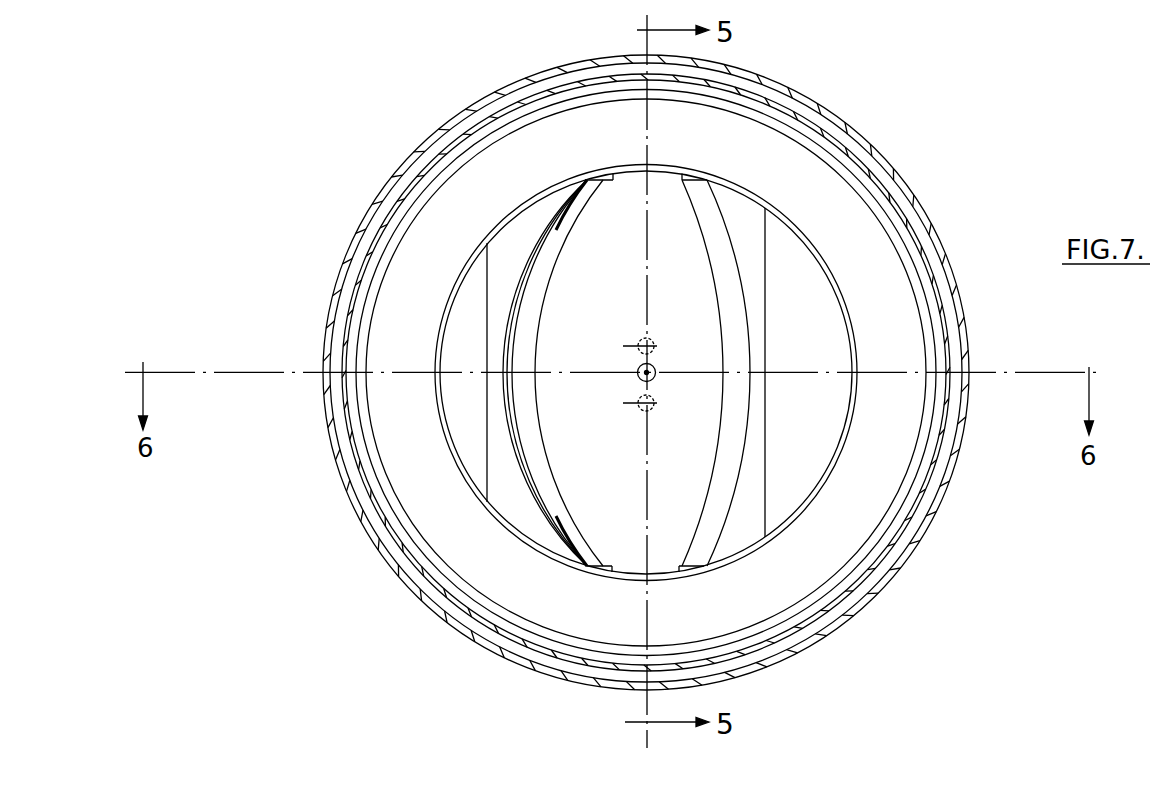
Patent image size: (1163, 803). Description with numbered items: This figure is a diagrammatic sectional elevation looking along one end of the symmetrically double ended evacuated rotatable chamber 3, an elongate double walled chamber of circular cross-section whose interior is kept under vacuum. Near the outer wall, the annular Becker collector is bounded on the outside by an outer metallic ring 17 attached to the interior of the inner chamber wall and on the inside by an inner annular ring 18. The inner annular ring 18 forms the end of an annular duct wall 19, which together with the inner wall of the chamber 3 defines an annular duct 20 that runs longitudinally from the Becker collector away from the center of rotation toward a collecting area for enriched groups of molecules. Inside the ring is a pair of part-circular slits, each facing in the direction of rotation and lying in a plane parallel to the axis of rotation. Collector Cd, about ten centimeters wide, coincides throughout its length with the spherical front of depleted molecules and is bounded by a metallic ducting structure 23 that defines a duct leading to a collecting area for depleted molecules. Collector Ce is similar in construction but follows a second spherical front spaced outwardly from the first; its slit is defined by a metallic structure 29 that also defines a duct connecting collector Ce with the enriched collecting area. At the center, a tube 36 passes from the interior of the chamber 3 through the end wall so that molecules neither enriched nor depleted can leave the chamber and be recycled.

The evacuated rotatable chamber 3 is at (927, 212).
The outer metallic ring 17 is at (920, 475).
The inner annular ring 18 is at (848, 322).
The annular duct wall 19 is at (815, 555).
The annular duct 20 is at (885, 525).
The metallic ducting structure 23 is at (755, 284).
The metallic structure 29 is at (528, 312).
The tube 36 is at (652, 368).
The collector Ce is at (505, 402).
The collector Cd is at (722, 448).